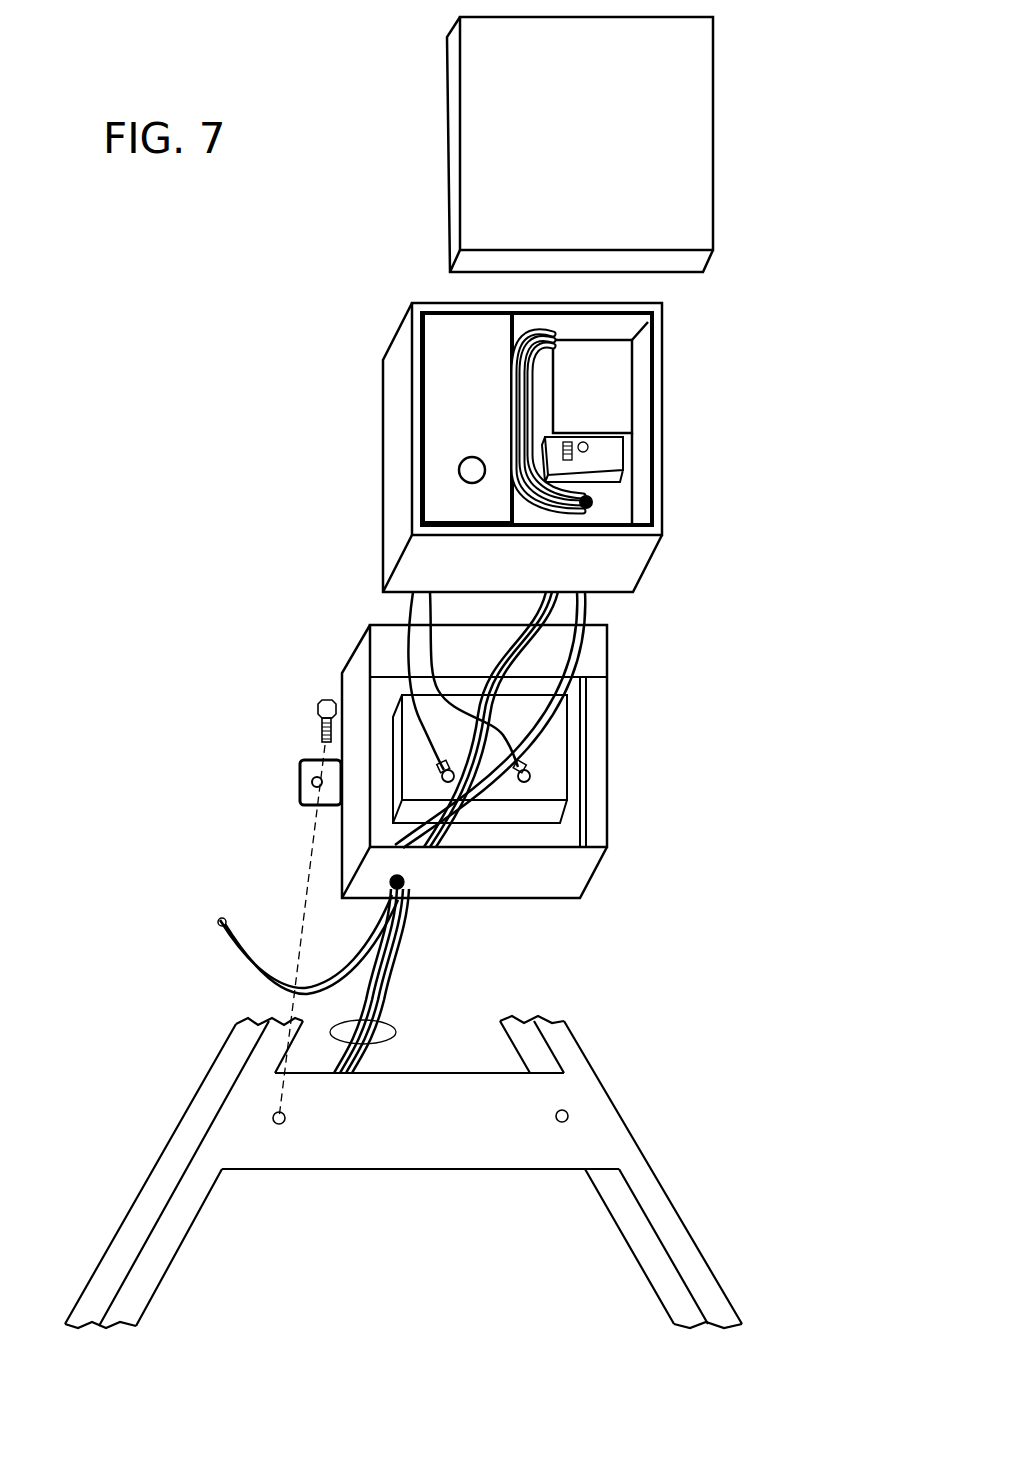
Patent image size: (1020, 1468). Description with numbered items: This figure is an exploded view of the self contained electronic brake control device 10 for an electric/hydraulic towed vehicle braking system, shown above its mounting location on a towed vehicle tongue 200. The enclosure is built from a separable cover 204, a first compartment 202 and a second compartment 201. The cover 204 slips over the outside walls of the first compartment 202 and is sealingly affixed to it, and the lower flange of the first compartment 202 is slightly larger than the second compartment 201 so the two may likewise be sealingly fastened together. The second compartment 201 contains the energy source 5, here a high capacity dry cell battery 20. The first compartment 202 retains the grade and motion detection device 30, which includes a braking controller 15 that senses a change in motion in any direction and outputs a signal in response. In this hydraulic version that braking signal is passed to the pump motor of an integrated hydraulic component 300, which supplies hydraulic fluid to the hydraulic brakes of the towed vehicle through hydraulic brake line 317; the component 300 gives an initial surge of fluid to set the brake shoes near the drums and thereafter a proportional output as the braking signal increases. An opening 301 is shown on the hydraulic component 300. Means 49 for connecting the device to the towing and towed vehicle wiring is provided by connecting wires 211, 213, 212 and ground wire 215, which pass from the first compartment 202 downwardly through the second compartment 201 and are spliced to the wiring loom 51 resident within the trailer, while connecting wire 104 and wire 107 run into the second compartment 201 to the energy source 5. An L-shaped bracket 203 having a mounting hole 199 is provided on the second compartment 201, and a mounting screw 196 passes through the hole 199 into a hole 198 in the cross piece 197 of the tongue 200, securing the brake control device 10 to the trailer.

The electronic brake control device 10 is at (193, 451).
The separable cover 204 is at (690, 150).
The first compartment 202 is at (638, 480).
The integrated hydraulic component 300 is at (470, 387).
The aperture 301 is at (470, 470).
The grade and motion detection device 30 is at (617, 365).
The braking controller 15 is at (617, 380).
The connecting wire 104 is at (407, 608).
The wire 107 is at (430, 614).
The battery 20 is at (555, 780).
The second compartment 201 is at (572, 829).
The energy source 5 is at (755, 767).
The connecting wire 211 is at (547, 633).
The connecting wire 213 is at (530, 652).
The connecting wire 212 is at (503, 658).
The hydraulic brake line 317 is at (568, 683).
The ground wire 215 is at (400, 832).
The means for connecting 49 is at (397, 1036).
The mounting screw 196 is at (315, 703).
The L-shaped bracket 203 is at (300, 770).
The mounting hole 199 is at (300, 790).
The towed vehicle tongue 200 is at (672, 1231).
The wiring loom 51 is at (639, 1244).
The cross piece 197 is at (408, 1126).
The hole 198 is at (271, 1118).